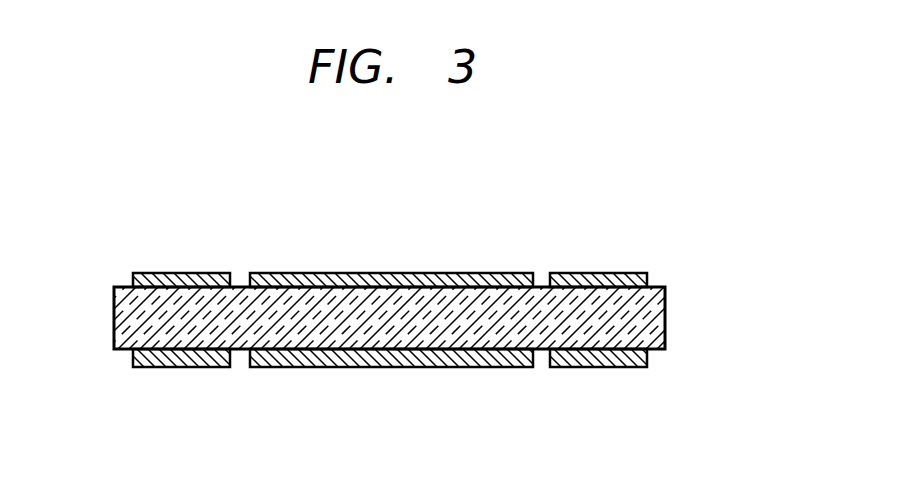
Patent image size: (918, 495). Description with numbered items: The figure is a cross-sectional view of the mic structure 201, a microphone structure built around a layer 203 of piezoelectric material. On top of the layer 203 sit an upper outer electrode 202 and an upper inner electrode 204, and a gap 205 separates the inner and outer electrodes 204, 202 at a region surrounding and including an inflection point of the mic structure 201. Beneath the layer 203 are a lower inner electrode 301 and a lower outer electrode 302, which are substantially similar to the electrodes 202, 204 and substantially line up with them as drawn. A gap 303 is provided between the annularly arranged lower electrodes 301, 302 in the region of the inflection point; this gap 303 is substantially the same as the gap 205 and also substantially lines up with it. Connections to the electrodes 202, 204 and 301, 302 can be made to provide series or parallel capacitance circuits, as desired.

The mic structure 201 is at (668, 176).
The upper outer electrode 202 is at (176, 272).
The layer of piezoelectric material 203 is at (665, 323).
The upper inner electrode 204 is at (391, 272).
The gap 205 is at (243, 274).
The lower inner electrode 301 is at (385, 369).
The lower outer electrode 302 is at (175, 368).
The gap 303 is at (240, 369).